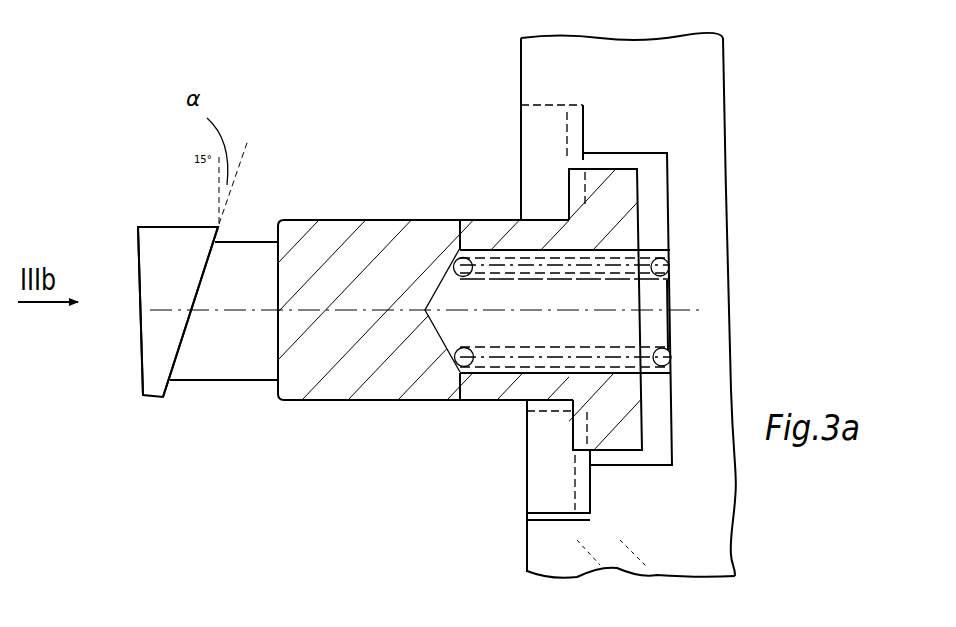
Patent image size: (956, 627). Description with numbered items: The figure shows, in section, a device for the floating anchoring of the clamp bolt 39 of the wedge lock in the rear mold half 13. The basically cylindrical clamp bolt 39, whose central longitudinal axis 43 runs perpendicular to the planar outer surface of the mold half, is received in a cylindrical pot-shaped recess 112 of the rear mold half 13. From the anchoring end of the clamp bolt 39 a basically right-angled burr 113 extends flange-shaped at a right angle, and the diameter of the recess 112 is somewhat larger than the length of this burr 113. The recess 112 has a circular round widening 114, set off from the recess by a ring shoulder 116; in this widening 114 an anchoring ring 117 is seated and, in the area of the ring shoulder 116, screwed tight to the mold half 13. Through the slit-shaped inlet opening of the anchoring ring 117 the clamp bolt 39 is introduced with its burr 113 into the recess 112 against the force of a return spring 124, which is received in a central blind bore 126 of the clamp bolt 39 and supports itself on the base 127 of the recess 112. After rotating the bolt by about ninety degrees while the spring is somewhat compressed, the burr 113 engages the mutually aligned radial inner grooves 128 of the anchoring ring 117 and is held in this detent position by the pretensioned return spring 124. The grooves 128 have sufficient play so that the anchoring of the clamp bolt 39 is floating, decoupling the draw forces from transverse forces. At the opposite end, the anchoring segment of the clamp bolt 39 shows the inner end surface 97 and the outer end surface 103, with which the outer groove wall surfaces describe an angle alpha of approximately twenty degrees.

The rear mold half 13 is at (720, 525).
The clamp bolt 39 is at (367, 378).
The central longitudinal axis 43 is at (613, 308).
The inner end surface 97 is at (275, 341).
The outer end surface 103 is at (135, 287).
The pot-shaped recess 112 is at (665, 137).
The burr 113 is at (615, 202).
The widening 114 is at (552, 100).
The ring shoulder 116 is at (583, 125).
The anchoring ring 117 is at (533, 142).
The return spring 124 is at (597, 263).
The central blind bore 126 is at (503, 248).
The base 127 is at (674, 318).
The inner groove 128 is at (585, 145).